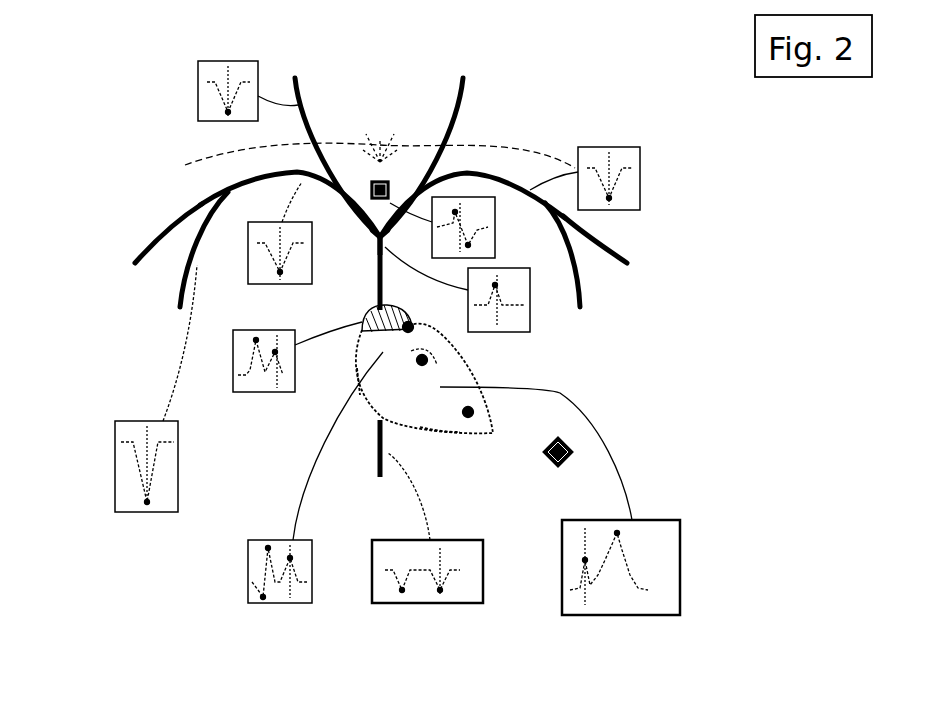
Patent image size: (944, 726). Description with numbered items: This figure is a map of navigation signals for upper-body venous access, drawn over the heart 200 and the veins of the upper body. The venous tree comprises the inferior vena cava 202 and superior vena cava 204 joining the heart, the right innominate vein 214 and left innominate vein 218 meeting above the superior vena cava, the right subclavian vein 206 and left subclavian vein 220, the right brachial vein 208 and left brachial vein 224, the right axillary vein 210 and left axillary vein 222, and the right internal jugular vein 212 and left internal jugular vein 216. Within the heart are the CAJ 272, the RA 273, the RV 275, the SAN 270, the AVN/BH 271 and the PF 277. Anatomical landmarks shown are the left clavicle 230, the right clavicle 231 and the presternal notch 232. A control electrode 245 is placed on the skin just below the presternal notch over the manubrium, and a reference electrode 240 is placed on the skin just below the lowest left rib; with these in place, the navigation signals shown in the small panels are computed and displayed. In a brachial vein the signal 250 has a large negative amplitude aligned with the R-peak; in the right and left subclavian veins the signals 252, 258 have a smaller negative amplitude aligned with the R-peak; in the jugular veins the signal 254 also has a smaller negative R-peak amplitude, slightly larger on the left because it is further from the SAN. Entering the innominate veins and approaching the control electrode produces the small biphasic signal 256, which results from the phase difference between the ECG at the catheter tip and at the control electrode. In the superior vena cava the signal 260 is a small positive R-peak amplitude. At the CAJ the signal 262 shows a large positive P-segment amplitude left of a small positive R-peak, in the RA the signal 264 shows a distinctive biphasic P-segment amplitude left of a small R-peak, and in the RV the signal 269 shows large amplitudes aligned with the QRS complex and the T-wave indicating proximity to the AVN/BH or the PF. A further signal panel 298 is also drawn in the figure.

The heart 200 is at (425, 432).
The inferior vena cava 202 is at (372, 445).
The superior vena cava 204 is at (372, 283).
The right subclavian vein 206 is at (220, 193).
The right brachial vein 208 is at (173, 297).
The right axillary vein 210 is at (148, 238).
The right internal jugular vein 212 is at (307, 77).
The right innominate vein 214 is at (348, 217).
The left internal jugular vein 216 is at (467, 88).
The left innominate vein 218 is at (382, 218).
The left subclavian vein 220 is at (503, 173).
The left axillary vein 222 is at (627, 248).
The left brachial vein 224 is at (587, 295).
The left clavicle 230 is at (517, 135).
The right clavicle 231 is at (185, 163).
The presternal notch 232 is at (400, 130).
The reference electrode 240 is at (562, 468).
The control electrode 245 is at (368, 190).
The brachial vein navigation signal 250 is at (147, 518).
The right subclavian vein navigation signal 252 is at (242, 250).
The jugular vein navigation signal 254 is at (190, 92).
The biphasic navigation signal near control electrode 256 is at (497, 232).
The left subclavian vein navigation signal 258 is at (642, 188).
The superior vena cava navigation signal 260 is at (532, 310).
The CAJ navigation signal 262 is at (258, 395).
The RA navigation signal 264 is at (278, 606).
The RV navigation signal 269 is at (682, 618).
The SAN 270 is at (433, 340).
The AVN/BH 271 is at (437, 363).
The CAJ 272 is at (360, 323).
The RA 273 is at (355, 383).
The RV 275 is at (443, 413).
The PF 277 is at (478, 412).
The navigation signal 298 is at (418, 606).